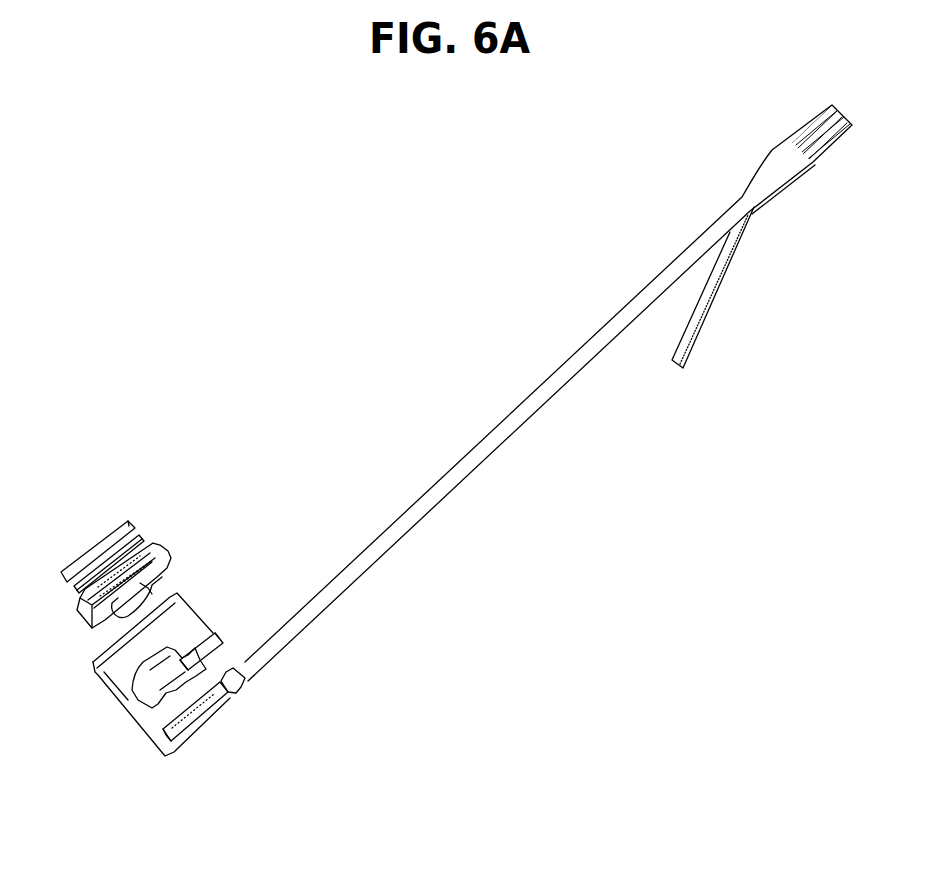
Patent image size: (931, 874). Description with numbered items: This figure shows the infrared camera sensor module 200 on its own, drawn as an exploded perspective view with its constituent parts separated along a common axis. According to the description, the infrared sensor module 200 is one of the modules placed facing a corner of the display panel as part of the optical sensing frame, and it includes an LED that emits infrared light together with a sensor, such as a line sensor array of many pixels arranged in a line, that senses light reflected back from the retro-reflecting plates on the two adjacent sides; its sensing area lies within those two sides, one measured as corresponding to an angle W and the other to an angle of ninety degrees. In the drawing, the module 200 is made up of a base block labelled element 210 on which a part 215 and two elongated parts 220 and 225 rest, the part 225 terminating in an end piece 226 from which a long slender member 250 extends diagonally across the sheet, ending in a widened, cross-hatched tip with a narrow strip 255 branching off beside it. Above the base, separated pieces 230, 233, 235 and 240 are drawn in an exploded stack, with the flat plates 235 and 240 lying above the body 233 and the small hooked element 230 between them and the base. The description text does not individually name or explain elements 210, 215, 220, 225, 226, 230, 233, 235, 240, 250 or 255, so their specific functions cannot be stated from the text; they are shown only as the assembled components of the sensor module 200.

The infrared camera sensor module 200 is at (251, 423).
The housing 210 is at (100, 668).
The contact terminal 215 is at (122, 692).
The pin 220 is at (193, 660).
The pin 225 is at (197, 707).
The cable end ferrule 226 is at (240, 688).
The clip 230 is at (157, 581).
The cover body 233 is at (160, 545).
The plate 235 is at (141, 532).
The cover plate 240 is at (96, 554).
The cable 250 is at (457, 474).
The flexible strip 255 is at (706, 297).